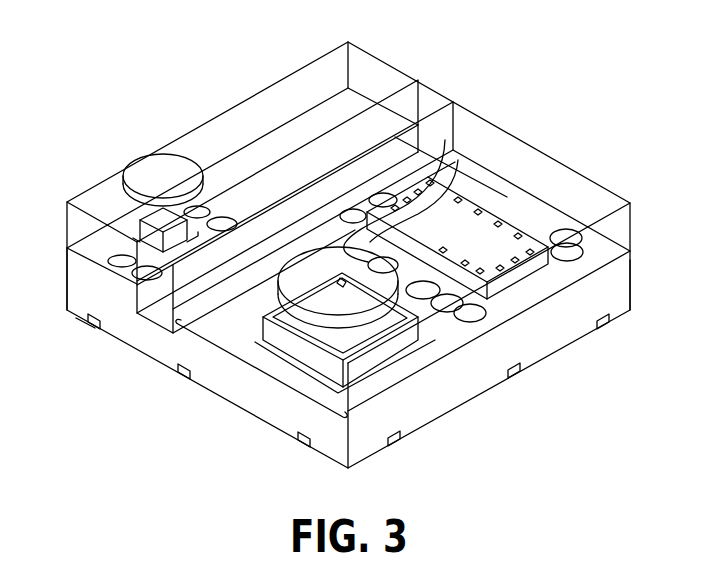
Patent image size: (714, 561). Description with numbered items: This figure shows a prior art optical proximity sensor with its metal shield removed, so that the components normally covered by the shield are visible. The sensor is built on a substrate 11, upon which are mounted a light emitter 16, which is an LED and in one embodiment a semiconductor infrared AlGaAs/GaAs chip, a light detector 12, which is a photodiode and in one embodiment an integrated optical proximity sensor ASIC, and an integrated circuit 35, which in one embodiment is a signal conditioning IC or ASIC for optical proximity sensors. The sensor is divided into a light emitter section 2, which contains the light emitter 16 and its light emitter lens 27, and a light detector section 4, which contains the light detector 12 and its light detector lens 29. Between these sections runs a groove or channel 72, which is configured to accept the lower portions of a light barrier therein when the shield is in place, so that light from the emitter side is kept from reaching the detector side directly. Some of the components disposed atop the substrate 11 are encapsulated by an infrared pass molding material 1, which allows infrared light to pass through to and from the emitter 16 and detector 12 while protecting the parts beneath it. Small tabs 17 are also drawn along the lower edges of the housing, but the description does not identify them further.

The infrared pass molding material 1 is at (314, 82).
The light emitter section 2 is at (127, 298).
The light detector section 4 is at (263, 371).
The substrate 11 is at (620, 295).
The light detector 12 is at (383, 350).
The light emitter 16 is at (163, 227).
The latching tabs 17 is at (300, 440).
The light emitter lens 27 is at (163, 172).
The light detector lens 29 is at (445, 140).
The integrated circuit 35 is at (470, 230).
The groove or channel 72 is at (100, 326).